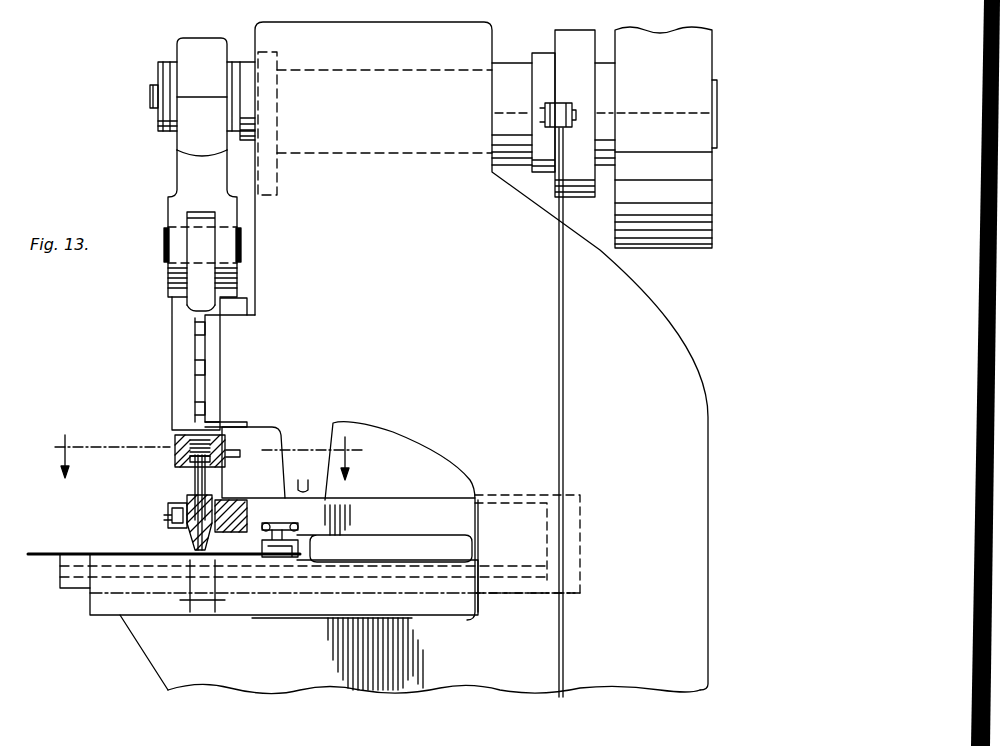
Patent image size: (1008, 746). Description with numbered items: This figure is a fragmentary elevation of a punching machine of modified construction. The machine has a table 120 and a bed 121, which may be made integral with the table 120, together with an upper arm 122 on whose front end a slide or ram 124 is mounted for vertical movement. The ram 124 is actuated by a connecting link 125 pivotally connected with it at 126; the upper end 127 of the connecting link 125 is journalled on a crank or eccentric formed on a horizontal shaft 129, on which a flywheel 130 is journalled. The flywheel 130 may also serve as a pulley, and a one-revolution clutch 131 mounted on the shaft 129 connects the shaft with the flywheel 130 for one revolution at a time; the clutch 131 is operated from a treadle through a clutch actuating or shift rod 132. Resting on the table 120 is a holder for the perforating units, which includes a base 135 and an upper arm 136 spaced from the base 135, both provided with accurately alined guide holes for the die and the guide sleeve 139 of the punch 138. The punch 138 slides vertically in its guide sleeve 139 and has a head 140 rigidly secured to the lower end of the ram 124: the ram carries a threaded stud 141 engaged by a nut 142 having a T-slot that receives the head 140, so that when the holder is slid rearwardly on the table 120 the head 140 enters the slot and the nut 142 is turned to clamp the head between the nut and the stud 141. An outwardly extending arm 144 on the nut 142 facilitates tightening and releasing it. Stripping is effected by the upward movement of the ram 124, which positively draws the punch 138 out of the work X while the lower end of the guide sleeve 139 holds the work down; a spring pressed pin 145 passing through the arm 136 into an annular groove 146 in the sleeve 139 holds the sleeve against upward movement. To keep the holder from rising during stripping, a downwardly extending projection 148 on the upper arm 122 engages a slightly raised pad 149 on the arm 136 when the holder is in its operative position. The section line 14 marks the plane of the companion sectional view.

The section line 14 is at (200, 457).
The table 120 is at (95, 605).
The bed 121 is at (271, 652).
The upper arm 122 is at (438, 358).
The slide or ram 124 is at (178, 347).
The connecting link 125 is at (180, 172).
The pivot connection 126 is at (238, 248).
The upper end of connecting link 127 is at (202, 97).
The horizontal shaft 129 is at (427, 70).
The flywheel 130 is at (666, 137).
The one-revolution clutch 131 is at (568, 40).
The clutch actuating or shift rod 132 is at (558, 327).
The base 135 is at (70, 585).
The upper arm of holder 136 is at (428, 500).
The punch 138 is at (197, 478).
The guide sleeve 139 is at (190, 497).
The head 140 is at (178, 452).
The threaded stud 141 is at (176, 437).
The nut 142 is at (226, 456).
The outwardly extending arm 144 is at (240, 453).
The spring pressed pin 145 is at (173, 530).
The annular groove 146 is at (250, 525).
The downwardly extending projection 148 is at (303, 483).
The raised pad 149 is at (330, 508).
The work X is at (40, 553).